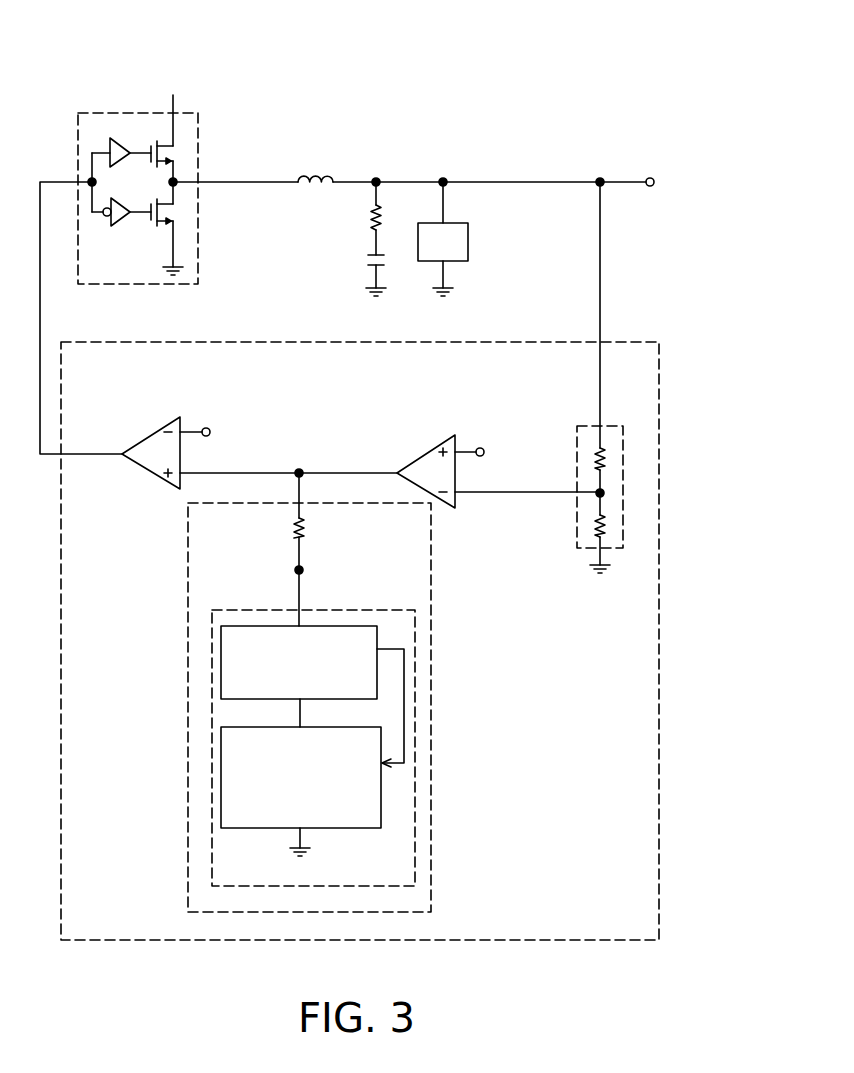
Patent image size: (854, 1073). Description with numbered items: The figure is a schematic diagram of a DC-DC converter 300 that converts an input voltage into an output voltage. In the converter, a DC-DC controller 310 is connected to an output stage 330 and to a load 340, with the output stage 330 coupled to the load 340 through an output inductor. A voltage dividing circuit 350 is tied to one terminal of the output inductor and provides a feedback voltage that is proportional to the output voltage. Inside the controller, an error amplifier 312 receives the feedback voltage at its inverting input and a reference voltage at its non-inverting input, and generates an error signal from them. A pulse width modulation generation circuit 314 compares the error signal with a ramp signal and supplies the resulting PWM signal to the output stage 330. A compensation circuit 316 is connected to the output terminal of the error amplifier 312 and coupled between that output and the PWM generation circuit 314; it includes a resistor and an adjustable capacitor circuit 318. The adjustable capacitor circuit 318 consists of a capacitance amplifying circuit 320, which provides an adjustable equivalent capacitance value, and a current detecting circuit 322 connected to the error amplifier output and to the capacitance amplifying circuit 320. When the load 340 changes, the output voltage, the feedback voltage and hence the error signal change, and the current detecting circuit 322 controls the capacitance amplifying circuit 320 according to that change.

The DC-DC converter 300 is at (600, 992).
The DC-DC controller 310 is at (638, 338).
The error amplifier 312 is at (432, 446).
The pulse width modulation generation circuit 314 is at (150, 431).
The compensation circuit 316 is at (431, 604).
The adjustable capacitor circuit 318 is at (416, 718).
The capacitance amplifying circuit 320 is at (221, 742).
The current detecting circuit 322 is at (221, 650).
The output stage 330 is at (198, 134).
The load 340 is at (468, 240).
The voltage dividing circuit 350 is at (617, 422).